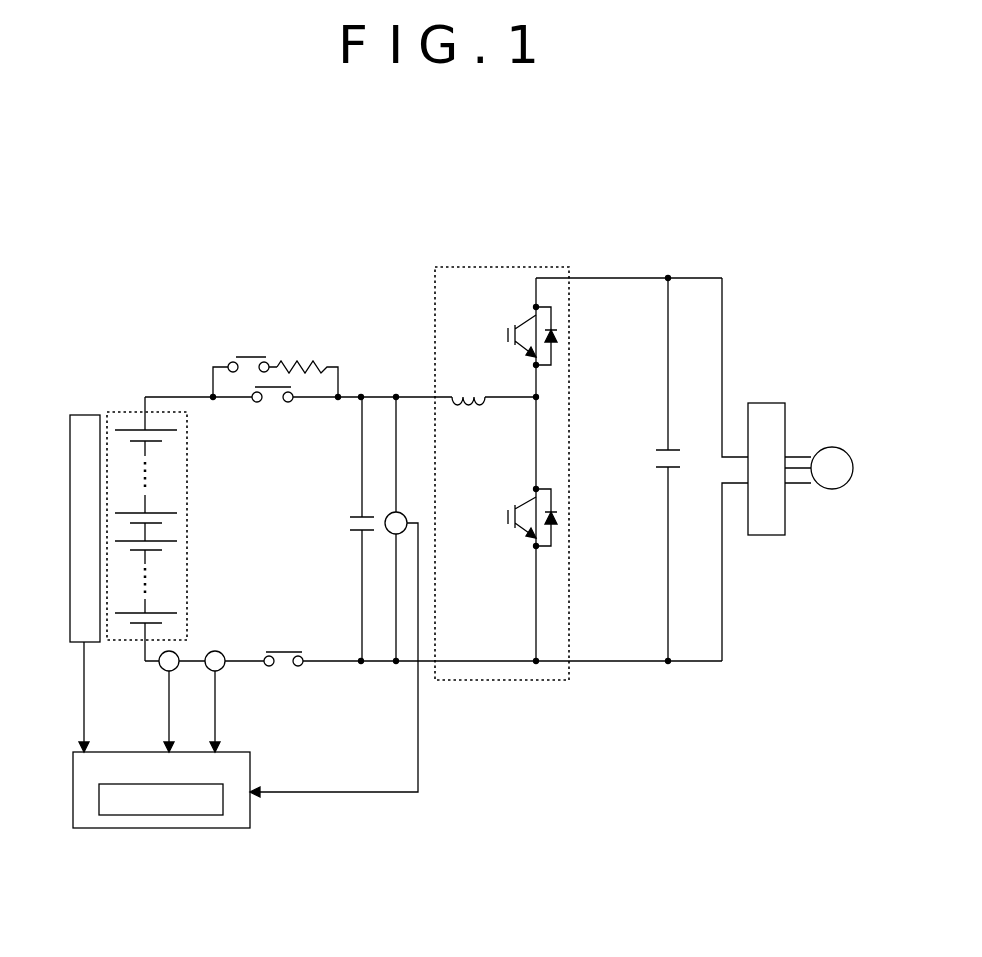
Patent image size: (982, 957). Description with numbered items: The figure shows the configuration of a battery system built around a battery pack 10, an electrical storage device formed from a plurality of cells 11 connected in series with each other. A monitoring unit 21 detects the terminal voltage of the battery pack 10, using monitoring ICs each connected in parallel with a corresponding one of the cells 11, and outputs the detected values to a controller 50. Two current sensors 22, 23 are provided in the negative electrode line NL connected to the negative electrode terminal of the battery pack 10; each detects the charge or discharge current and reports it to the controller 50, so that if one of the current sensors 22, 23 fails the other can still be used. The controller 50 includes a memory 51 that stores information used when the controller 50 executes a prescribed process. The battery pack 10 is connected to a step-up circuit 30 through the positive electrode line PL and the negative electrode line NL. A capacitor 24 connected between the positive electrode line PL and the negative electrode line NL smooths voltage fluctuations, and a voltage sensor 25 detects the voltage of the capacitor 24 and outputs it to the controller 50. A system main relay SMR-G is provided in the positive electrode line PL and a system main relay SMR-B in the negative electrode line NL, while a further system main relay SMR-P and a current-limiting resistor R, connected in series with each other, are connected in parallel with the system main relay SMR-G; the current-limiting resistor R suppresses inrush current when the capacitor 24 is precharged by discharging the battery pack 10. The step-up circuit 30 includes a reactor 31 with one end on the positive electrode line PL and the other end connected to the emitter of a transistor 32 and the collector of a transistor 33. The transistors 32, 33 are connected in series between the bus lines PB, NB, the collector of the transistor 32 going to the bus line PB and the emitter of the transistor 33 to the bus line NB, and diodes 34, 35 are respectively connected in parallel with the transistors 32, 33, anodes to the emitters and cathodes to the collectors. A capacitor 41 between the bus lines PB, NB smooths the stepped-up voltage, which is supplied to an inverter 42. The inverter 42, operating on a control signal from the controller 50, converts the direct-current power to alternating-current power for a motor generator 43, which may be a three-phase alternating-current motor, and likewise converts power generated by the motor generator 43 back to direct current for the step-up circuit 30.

The battery pack 10 is at (167, 505).
The cells 11 is at (178, 614).
The monitoring unit 21 is at (70, 527).
The current sensor 22 is at (160, 670).
The current sensor 23 is at (225, 657).
The capacitor 24 is at (349, 524).
The voltage sensor 25 is at (404, 512).
The step-up circuit 30 is at (504, 444).
The reactor 31 is at (466, 412).
The transistor 32 is at (509, 325).
The transistor 33 is at (514, 532).
The diode 34 is at (553, 372).
The diode 35 is at (554, 548).
The capacitor 41 is at (655, 462).
The inverter 42 is at (765, 538).
The motor generator 43 is at (832, 446).
The controller 50 is at (161, 820).
The memory 51 is at (157, 817).
The system main relay SMR-P is at (243, 350).
The current-limiting resistor R is at (310, 355).
The system main relay SMR-G is at (275, 404).
The system main relay SMR-B is at (283, 668).
The positive electrode line PL is at (370, 394).
The negative electrode line NL is at (343, 668).
The bus line PB is at (603, 276).
The bus line NB is at (597, 665).